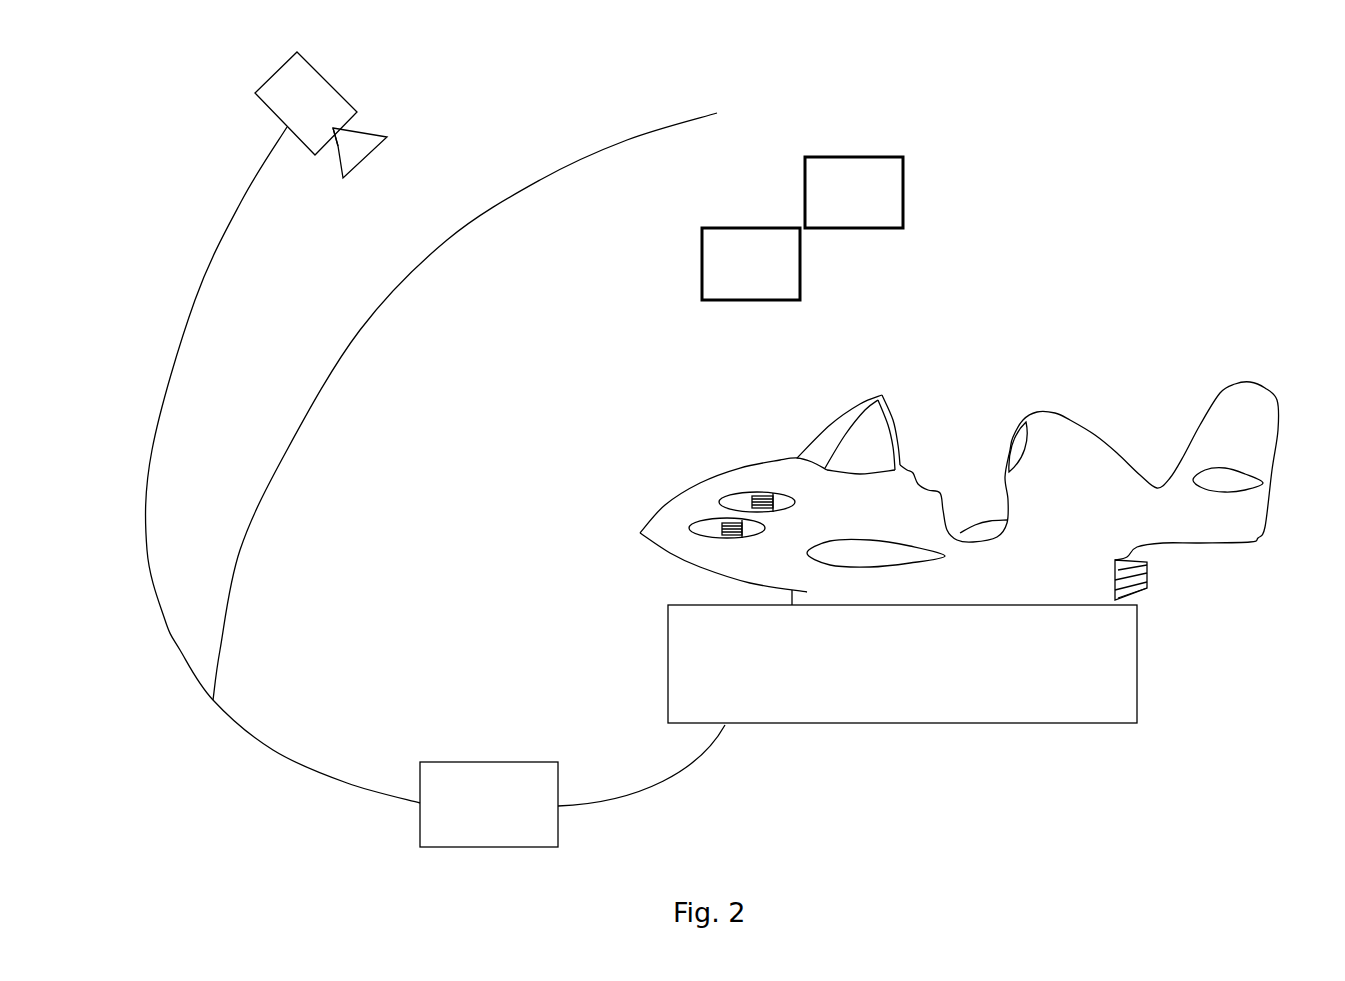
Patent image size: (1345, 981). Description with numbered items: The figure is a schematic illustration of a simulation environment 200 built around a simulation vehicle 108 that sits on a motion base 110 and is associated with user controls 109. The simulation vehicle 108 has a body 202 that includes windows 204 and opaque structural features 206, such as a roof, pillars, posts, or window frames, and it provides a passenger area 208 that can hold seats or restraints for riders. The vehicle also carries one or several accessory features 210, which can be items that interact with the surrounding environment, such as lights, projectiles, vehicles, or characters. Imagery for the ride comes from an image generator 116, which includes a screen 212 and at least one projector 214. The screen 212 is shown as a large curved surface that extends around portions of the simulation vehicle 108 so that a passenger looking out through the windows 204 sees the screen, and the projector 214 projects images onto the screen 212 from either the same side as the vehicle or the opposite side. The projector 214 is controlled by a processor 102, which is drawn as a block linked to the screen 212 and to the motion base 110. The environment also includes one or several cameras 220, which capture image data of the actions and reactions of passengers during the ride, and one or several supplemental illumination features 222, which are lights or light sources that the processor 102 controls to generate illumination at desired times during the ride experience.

The processor 102 is at (572, 786).
The simulation vehicle 108 is at (1039, 350).
The user controls 109 is at (915, 478).
The motion base 110 is at (1027, 725).
The image generator 116 is at (489, 80).
The simulation environment 200 is at (1195, 147).
The body 202 is at (717, 480).
The windows 204 is at (835, 438).
The opaque structural features 206 is at (882, 395).
The passenger area 208 is at (968, 438).
The accessory features 210 is at (716, 555).
The screen 212 is at (608, 138).
The projector 214 is at (278, 70).
The camera 220 is at (751, 264).
The supplemental illumination feature 222 is at (854, 192).